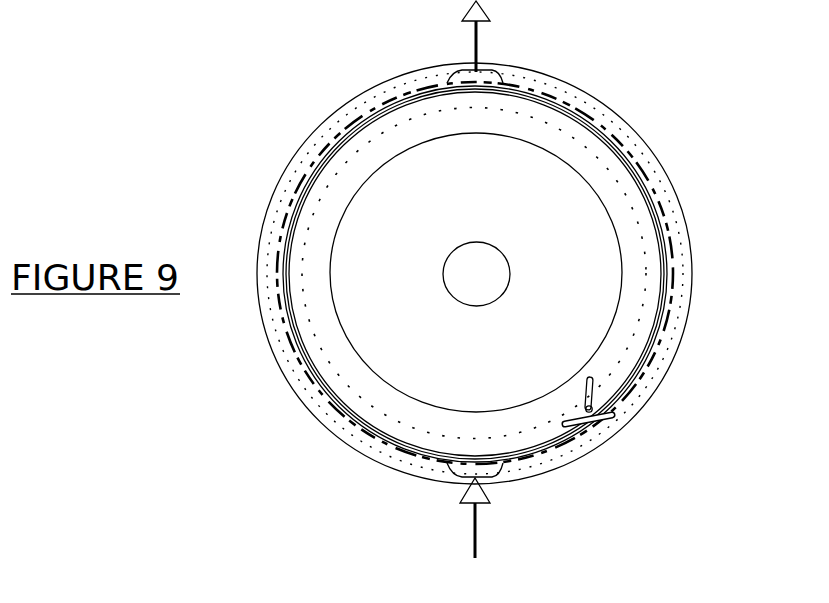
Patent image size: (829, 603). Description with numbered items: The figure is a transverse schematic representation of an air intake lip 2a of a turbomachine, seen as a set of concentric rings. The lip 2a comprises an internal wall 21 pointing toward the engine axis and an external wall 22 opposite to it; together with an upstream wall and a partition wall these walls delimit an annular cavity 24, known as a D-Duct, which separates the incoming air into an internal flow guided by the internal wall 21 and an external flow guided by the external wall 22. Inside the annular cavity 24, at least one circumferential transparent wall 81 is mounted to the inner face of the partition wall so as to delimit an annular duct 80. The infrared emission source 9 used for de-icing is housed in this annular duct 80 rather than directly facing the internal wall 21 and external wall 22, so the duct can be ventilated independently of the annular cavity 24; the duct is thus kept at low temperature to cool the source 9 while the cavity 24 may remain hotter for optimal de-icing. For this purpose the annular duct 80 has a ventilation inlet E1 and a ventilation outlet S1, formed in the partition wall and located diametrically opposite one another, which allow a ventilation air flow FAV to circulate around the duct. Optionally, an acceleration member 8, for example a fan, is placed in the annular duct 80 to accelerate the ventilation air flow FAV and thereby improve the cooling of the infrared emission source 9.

The external wall 22 is at (652, 153).
The infrared emission source 9 is at (594, 124).
The internal wall 21 is at (543, 152).
The annular cavity 24 is at (612, 215).
The annular duct 80 is at (646, 296).
The circumferential transparent wall 81 is at (627, 344).
The lip 2a is at (702, 331).
The acceleration member 8 is at (587, 406).
The ventilation outlet S1 is at (478, 72).
The ventilation inlet E1 is at (460, 479).
The ventilation air flow FAV is at (693, 187).